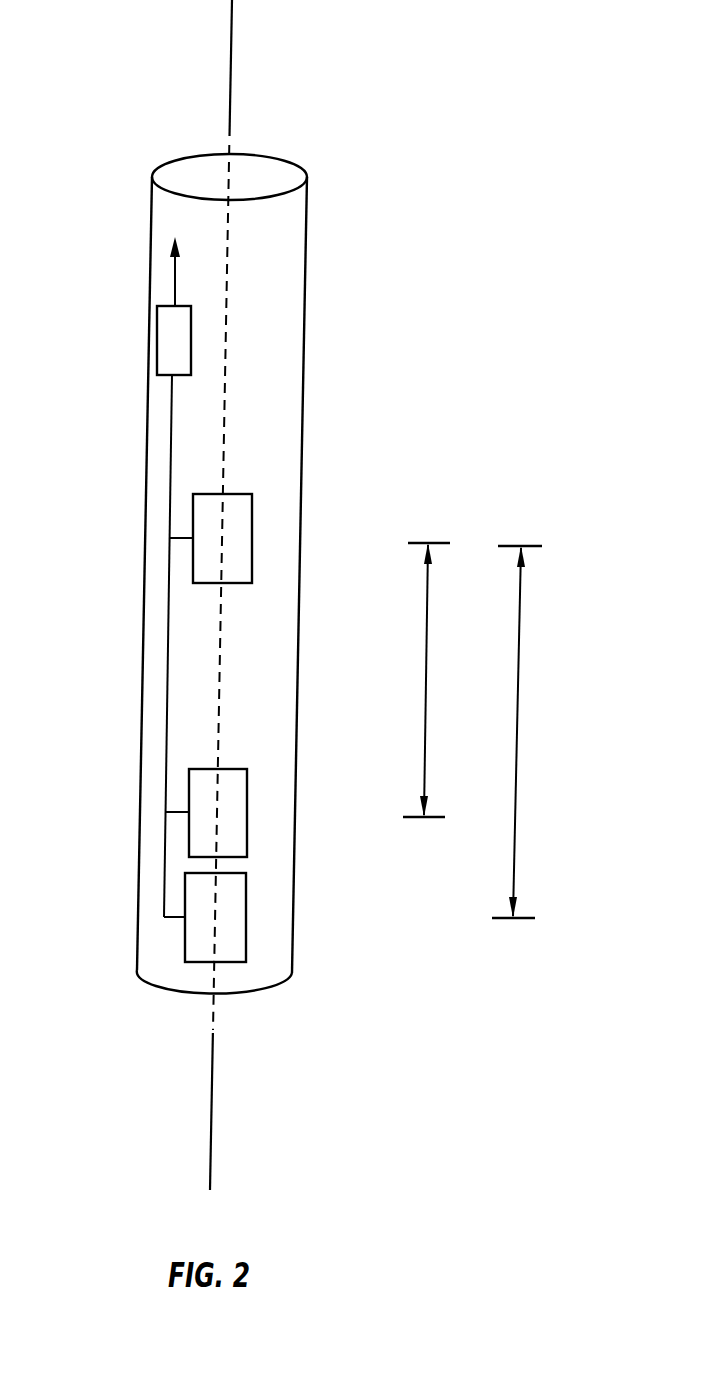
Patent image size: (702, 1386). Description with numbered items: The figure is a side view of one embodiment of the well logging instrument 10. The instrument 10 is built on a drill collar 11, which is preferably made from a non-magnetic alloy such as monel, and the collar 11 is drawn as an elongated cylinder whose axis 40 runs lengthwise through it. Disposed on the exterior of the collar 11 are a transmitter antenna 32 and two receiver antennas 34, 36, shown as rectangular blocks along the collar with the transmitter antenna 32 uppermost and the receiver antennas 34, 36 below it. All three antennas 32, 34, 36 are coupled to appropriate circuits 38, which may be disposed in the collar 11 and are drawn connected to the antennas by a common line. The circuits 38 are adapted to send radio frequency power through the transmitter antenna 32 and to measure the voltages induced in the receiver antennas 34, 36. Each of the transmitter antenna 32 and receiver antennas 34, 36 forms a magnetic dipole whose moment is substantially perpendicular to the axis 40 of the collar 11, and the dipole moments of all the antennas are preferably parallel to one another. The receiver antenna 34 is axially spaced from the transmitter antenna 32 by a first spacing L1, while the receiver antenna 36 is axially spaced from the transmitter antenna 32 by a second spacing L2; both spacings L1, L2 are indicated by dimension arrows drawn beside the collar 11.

The well logging instrument 10 is at (472, 254).
The drill collar 11 is at (307, 222).
The transmitter antenna 32 is at (236, 538).
The receiver antenna 34 is at (247, 812).
The receiver antenna 36 is at (246, 918).
The circuits 38 is at (157, 336).
The axis 40 is at (232, 52).
The first spacing L1 is at (427, 680).
The second spacing L2 is at (518, 718).